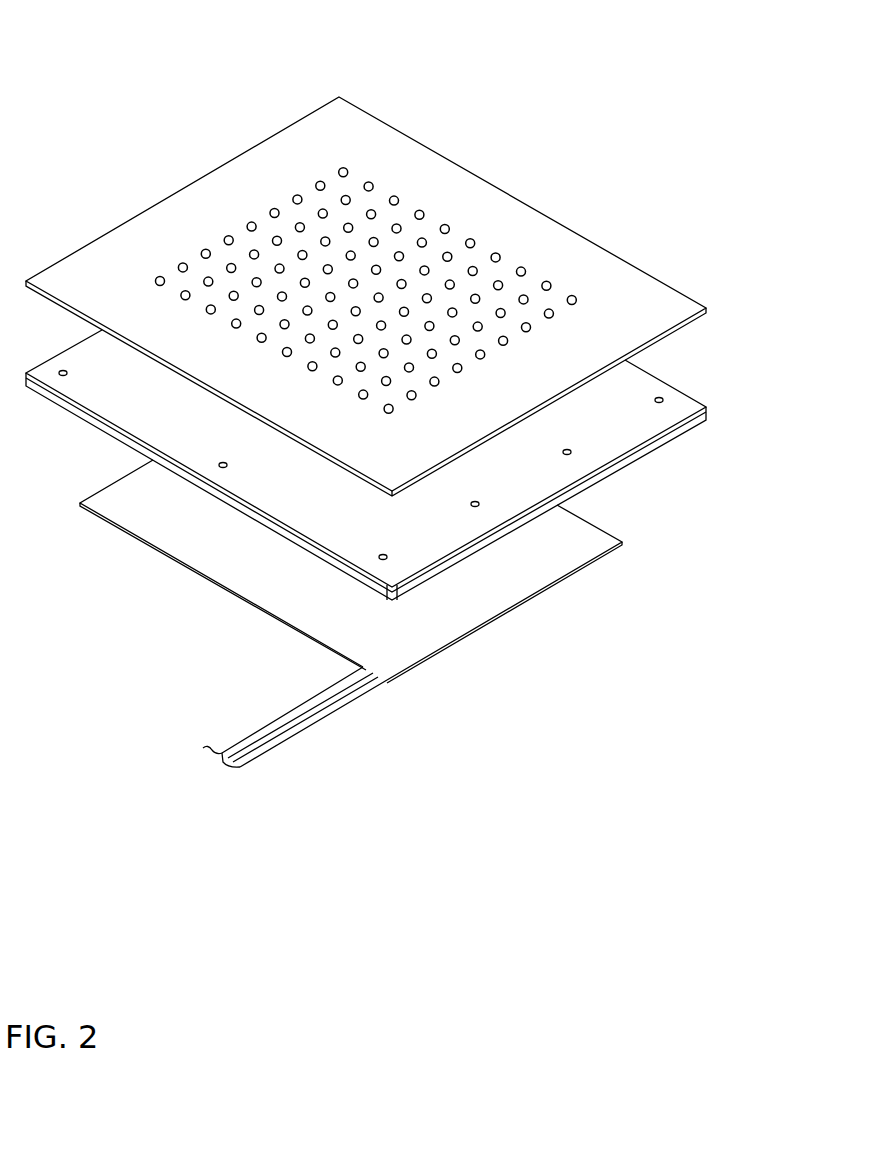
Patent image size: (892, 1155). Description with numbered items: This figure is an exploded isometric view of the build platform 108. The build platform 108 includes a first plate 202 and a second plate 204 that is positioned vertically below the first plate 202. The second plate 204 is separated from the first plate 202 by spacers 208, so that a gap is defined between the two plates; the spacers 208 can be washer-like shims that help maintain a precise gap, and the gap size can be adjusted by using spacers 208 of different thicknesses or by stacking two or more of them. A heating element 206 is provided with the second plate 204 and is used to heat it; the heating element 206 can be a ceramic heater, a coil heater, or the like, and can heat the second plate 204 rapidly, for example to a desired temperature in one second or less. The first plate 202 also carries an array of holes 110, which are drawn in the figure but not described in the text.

The build platform 108 is at (95, 64).
The holes 110 is at (343, 167).
The first plate 202 is at (651, 287).
The second plate 204 is at (683, 396).
The heating element 206 is at (488, 603).
The spacers 208 is at (63, 377).